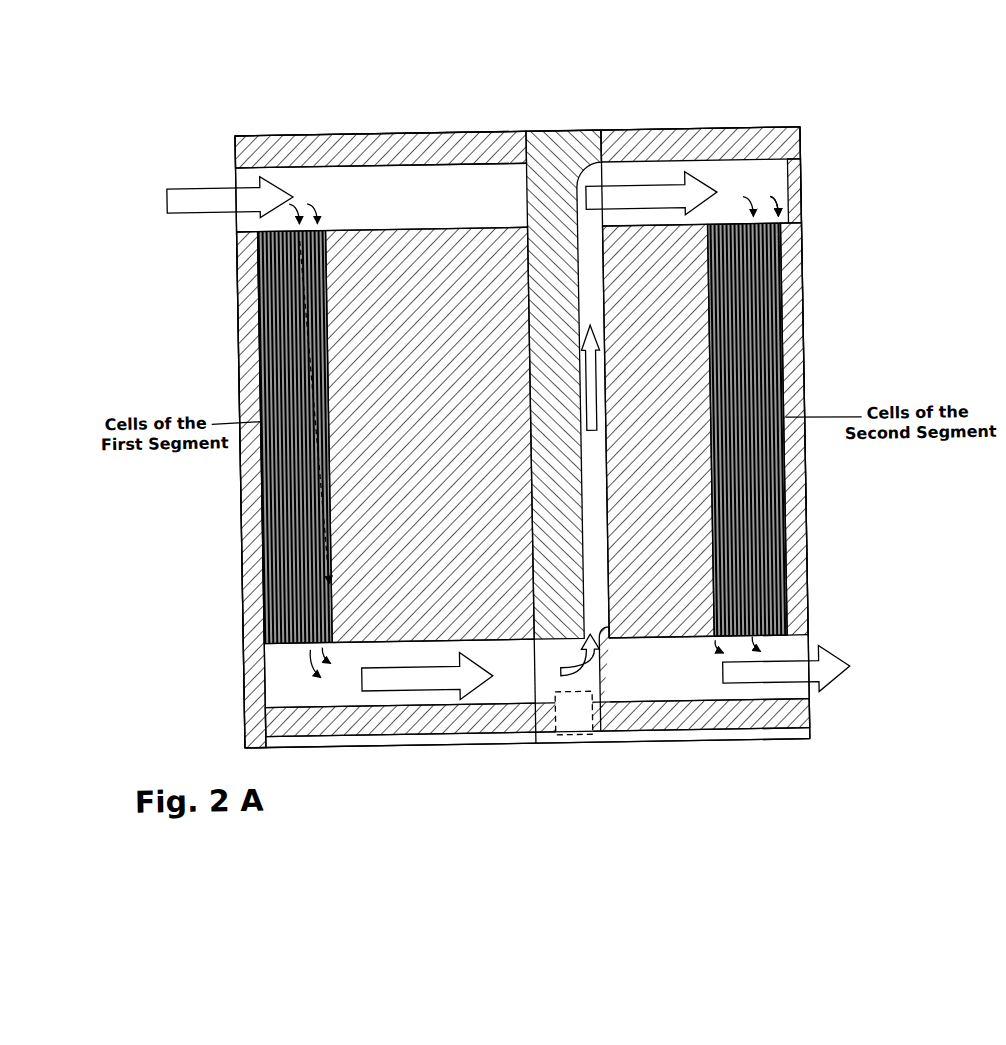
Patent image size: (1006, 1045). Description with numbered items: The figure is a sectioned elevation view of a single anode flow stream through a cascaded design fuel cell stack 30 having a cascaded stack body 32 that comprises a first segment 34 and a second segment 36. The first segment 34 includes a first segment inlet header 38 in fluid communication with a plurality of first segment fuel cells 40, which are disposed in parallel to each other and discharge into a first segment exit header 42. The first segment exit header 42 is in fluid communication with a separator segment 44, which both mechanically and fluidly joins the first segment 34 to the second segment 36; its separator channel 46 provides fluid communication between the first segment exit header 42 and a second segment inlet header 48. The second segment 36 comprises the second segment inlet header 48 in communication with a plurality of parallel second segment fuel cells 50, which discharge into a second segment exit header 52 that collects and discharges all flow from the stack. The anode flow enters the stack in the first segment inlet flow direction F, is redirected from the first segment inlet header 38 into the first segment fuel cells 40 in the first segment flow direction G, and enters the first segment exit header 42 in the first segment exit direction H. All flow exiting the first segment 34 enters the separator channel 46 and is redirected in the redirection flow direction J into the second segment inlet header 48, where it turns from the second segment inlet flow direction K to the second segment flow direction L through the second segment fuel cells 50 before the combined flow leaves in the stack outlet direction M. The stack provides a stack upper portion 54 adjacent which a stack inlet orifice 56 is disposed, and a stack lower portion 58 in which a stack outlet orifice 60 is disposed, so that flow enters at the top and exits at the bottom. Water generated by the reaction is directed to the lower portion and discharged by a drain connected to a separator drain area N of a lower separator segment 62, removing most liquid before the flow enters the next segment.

The cascaded design fuel cell stack 30 is at (823, 365).
The cascaded stack body 32 is at (242, 613).
The first segment 34 is at (357, 152).
The second segment 36 is at (700, 135).
The first segment inlet header 38 is at (296, 188).
The first segment fuel cells 40 is at (256, 490).
The first segment exit header 42 is at (379, 699).
The separator segment 44 is at (550, 147).
The separator channel 46 is at (597, 136).
The second segment inlet header 48 is at (771, 182).
The second segment fuel cells 50 is at (787, 331).
The second segment exit header 52 is at (726, 700).
The stack upper portion 54 is at (432, 133).
The stack inlet orifice 56 is at (239, 225).
The stack lower portion 58 is at (705, 751).
The stack outlet orifice 60 is at (794, 657).
The lower separator segment 62 is at (583, 707).
The first segment inlet flow direction F is at (196, 189).
The first segment flow direction G is at (247, 522).
The first segment exit direction H is at (461, 686).
The redirection flow direction J is at (569, 671).
The second segment inlet flow direction K is at (669, 195).
The second segment flow direction L is at (776, 212).
The stack outlet direction M is at (818, 677).
The separator drain area N is at (573, 738).